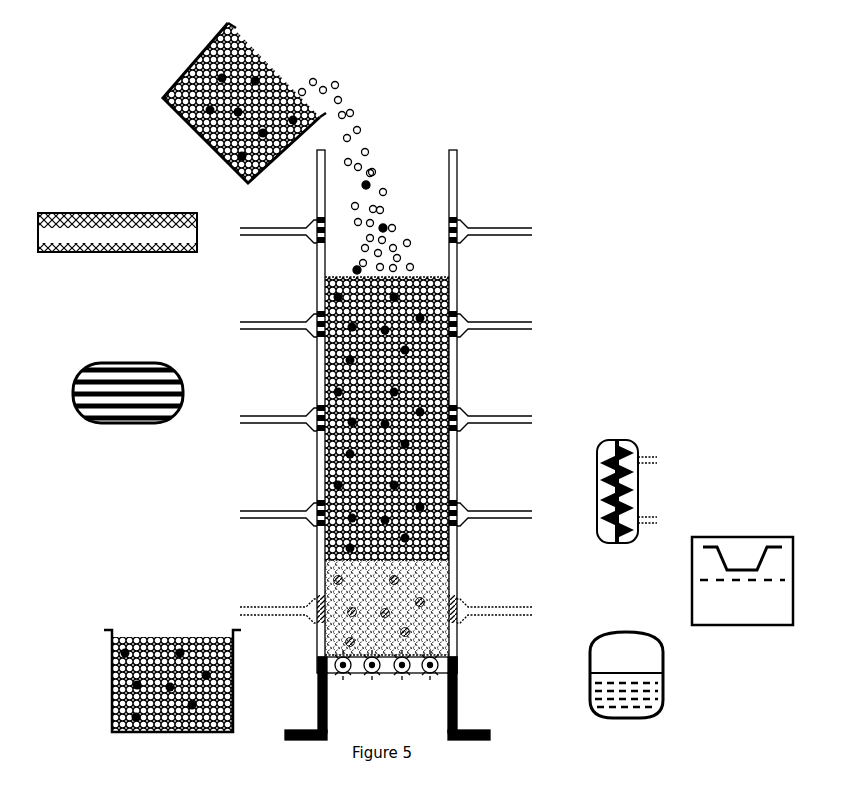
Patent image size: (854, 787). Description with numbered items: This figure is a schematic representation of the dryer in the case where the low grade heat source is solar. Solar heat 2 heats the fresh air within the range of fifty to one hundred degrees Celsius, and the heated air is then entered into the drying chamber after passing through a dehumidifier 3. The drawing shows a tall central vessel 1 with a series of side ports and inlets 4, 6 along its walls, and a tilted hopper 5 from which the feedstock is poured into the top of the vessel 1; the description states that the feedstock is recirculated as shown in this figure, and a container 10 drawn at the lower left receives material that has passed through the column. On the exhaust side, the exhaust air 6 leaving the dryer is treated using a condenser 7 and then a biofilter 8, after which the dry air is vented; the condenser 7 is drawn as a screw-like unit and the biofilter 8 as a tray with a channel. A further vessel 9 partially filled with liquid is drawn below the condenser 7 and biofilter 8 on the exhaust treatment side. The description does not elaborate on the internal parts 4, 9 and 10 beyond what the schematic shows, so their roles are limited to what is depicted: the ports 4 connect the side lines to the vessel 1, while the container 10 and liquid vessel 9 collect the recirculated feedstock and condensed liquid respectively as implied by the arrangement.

The reaction column 1 is at (466, 164).
The solar heat 2 is at (93, 197).
The dehumidifier 3 is at (118, 353).
The left inlet valve 4 is at (306, 222).
The feed hopper 5 is at (287, 61).
The exhaust air 6 is at (464, 226).
The condenser 7 is at (644, 432).
The biofilter 8 is at (716, 529).
The liquid vessel 9 is at (618, 622).
The collection container 10 is at (146, 620).